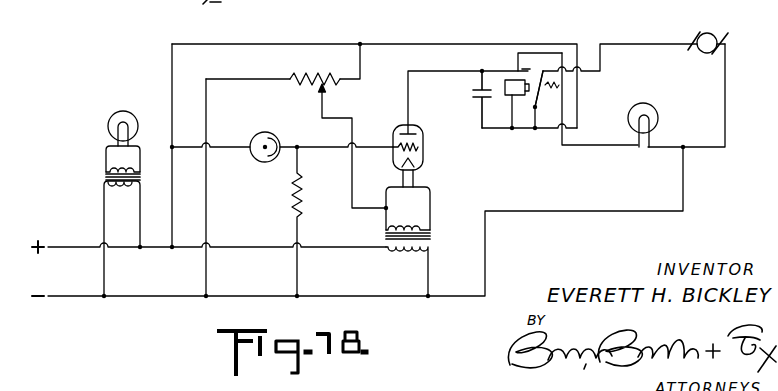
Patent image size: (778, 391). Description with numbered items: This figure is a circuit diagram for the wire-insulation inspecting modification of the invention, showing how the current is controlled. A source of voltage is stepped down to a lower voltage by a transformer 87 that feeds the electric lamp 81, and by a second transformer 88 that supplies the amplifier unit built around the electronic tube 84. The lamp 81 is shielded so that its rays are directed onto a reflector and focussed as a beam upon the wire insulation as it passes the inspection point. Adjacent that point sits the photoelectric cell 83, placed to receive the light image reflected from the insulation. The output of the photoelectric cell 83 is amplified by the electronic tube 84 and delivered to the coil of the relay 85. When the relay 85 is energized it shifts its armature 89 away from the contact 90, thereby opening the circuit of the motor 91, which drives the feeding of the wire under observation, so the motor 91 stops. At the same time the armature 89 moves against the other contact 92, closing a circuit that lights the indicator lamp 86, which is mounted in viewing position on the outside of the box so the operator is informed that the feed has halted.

The electric lamp 81 is at (148, 84).
The transformer 87 is at (107, 174).
The photoelectric cell 83 is at (262, 133).
The electronic tube 84 is at (424, 150).
The transformer 88 is at (430, 236).
The relay 85 is at (589, 99).
The armature 89 is at (537, 97).
The contact 90 is at (551, 63).
The contact 92 is at (530, 64).
The indicator lamp 86 is at (652, 106).
The motor 91 is at (719, 35).